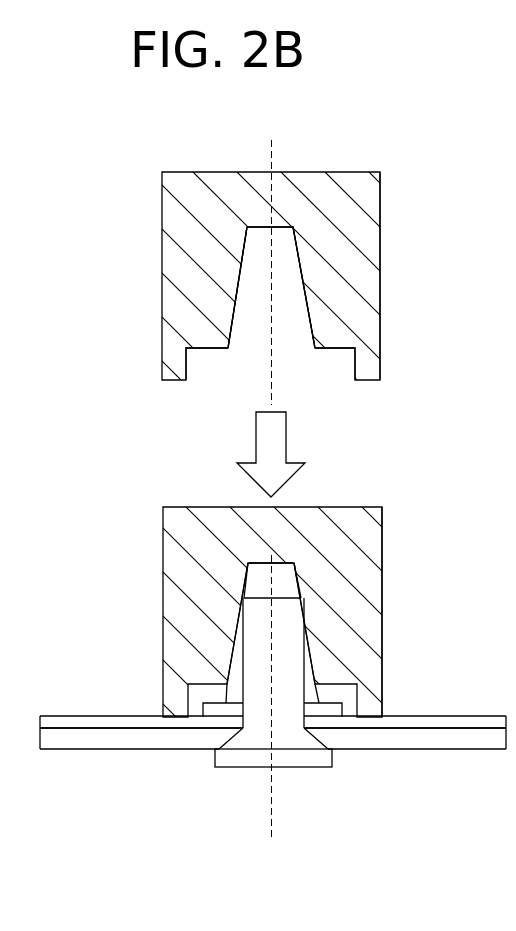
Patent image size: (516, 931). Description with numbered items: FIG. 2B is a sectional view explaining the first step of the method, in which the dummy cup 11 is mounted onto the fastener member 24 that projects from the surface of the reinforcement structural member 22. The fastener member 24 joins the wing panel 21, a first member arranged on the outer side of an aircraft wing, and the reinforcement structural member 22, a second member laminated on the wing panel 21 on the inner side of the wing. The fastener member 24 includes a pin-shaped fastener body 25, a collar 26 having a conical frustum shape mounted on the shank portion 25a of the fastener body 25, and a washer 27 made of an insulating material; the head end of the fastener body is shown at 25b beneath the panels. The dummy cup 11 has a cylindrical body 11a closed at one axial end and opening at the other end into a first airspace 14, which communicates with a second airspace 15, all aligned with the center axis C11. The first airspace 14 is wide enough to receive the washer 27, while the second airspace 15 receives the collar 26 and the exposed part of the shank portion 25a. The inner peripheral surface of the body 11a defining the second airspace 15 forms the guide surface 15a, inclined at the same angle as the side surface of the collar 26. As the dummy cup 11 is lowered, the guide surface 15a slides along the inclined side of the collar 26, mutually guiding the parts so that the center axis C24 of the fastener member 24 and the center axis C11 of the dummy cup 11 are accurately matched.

The dummy cup 11 is at (320, 172).
The cylindrical body 11a is at (382, 287).
The first airspace 14 is at (345, 367).
The second airspace 15 is at (299, 327).
The guide surface 15a is at (237, 325).
The center axis C11 is at (268, 152).
The wing panel 21 is at (428, 749).
The reinforcement structural member 22 is at (452, 716).
The fastener member 24 is at (321, 715).
The fastener body 25 is at (321, 698).
The shank portion 25a is at (289, 594).
The head of rivet 25b is at (238, 768).
The collar 26 is at (308, 638).
The washer 27 is at (333, 702).
The center axis C24 is at (271, 837).